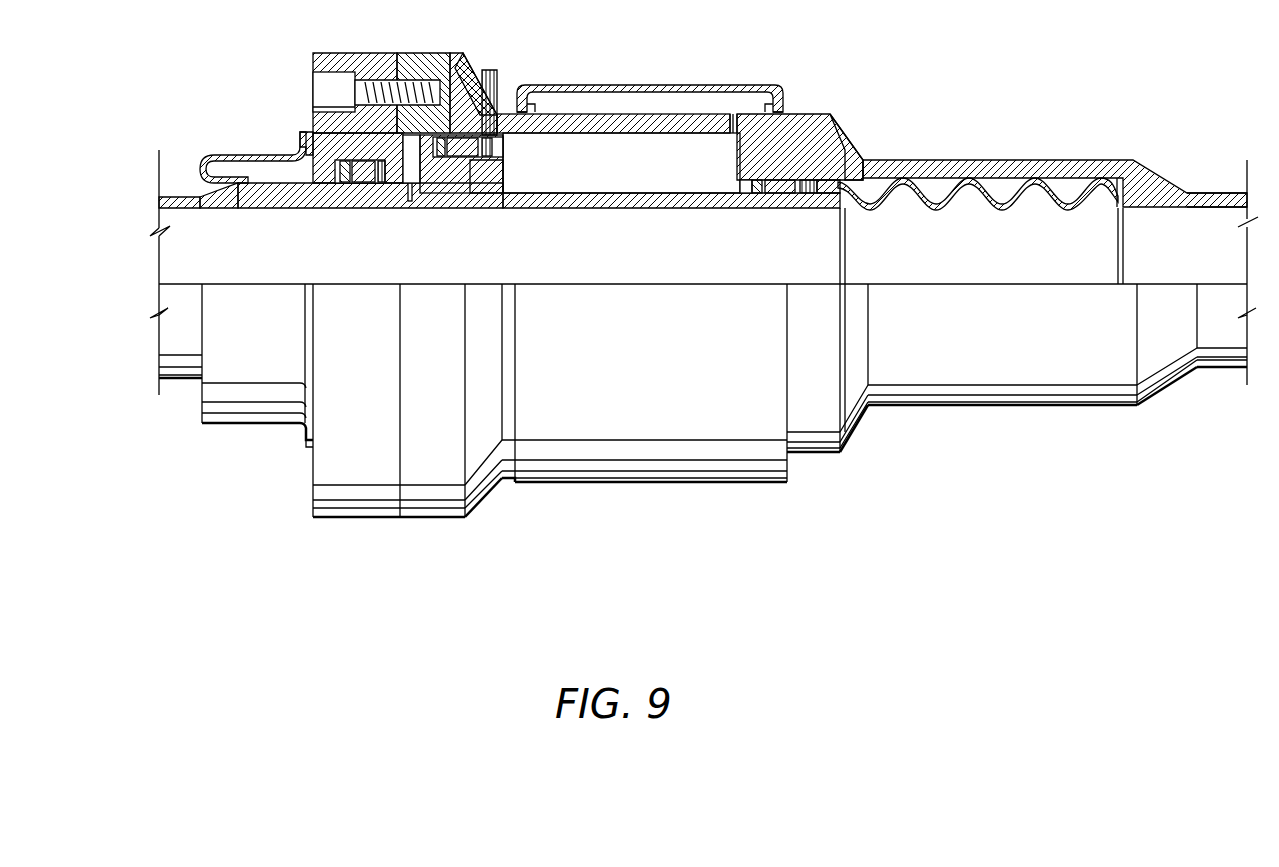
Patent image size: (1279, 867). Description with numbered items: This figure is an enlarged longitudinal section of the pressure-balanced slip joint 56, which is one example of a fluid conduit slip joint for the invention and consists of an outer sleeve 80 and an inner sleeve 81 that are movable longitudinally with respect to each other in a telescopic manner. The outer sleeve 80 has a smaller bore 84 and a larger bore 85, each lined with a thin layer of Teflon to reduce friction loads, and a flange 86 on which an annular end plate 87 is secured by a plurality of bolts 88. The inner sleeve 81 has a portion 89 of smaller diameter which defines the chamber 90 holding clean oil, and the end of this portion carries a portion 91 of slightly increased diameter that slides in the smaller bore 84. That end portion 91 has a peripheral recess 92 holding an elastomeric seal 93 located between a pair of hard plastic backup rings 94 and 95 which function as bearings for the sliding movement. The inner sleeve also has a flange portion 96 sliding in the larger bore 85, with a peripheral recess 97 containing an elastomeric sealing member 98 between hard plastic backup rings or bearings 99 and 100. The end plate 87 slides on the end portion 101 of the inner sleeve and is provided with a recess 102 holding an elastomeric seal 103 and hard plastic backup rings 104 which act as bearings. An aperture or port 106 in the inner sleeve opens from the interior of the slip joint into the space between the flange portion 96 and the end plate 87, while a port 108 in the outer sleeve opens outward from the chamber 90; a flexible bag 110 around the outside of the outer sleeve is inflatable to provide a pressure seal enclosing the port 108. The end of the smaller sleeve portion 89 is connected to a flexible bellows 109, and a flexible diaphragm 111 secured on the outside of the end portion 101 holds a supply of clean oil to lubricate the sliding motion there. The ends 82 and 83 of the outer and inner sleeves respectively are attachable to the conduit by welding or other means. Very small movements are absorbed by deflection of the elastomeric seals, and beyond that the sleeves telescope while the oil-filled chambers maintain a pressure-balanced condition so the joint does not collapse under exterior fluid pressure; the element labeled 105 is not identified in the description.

The slip joint 56 is at (814, 471).
The outer sleeve 80 is at (830, 116).
The inner sleeve 81 is at (247, 206).
The end of outer sleeve 82 is at (1207, 190).
The end of inner sleeve 83 is at (177, 195).
The smaller bore 84 is at (1057, 160).
The larger bore 85 is at (670, 135).
The flange 86 is at (420, 60).
The annular end plate 87 is at (333, 53).
The bolts 88 is at (390, 78).
The portion of smaller diameter 89 is at (625, 207).
The chamber 90 is at (602, 176).
The end portion 91 is at (837, 207).
The peripheral recess 92 is at (793, 200).
The elastomeric seal 93 is at (786, 178).
The backup ring 94 is at (742, 203).
The backup ring 95 is at (840, 150).
The flange portion 96 is at (478, 186).
The peripheral recess 97 is at (460, 165).
The elastomeric sealing member 98 is at (462, 75).
The backup ring 99 is at (450, 167).
The backup ring 100 is at (480, 85).
The end portion of sleeve 101 is at (200, 208).
The recess 102 is at (328, 108).
The elastomeric seal 103 is at (385, 188).
The backup rings 104 is at (300, 132).
The channel 105 is at (410, 193).
The aperture or port 106 is at (382, 197).
The port 108 is at (737, 120).
The flexible bellows 109 is at (1002, 208).
The flexible bag 110 is at (635, 84).
The flexible diaphragm 111 is at (233, 152).